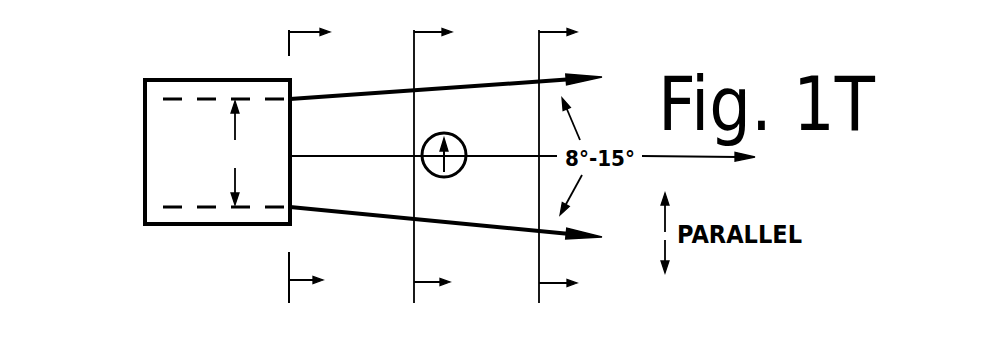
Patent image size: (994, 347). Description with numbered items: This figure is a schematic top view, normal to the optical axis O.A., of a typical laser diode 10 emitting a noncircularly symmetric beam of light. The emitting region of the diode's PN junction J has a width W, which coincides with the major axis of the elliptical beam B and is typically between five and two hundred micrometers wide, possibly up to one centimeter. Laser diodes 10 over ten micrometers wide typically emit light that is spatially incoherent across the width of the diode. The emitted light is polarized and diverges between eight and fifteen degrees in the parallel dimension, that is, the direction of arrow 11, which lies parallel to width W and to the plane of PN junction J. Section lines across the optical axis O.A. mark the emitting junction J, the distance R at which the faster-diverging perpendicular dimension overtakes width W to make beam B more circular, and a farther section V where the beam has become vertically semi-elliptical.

The laser diode 10 is at (120, 221).
The arrow 11 is at (464, 146).
The width W is at (235, 153).
The elliptical beam B is at (527, 241).
The optical axis O.A. is at (677, 158).
The PN junction J is at (304, 113).
The distance R is at (443, 163).
The section V is at (568, 163).